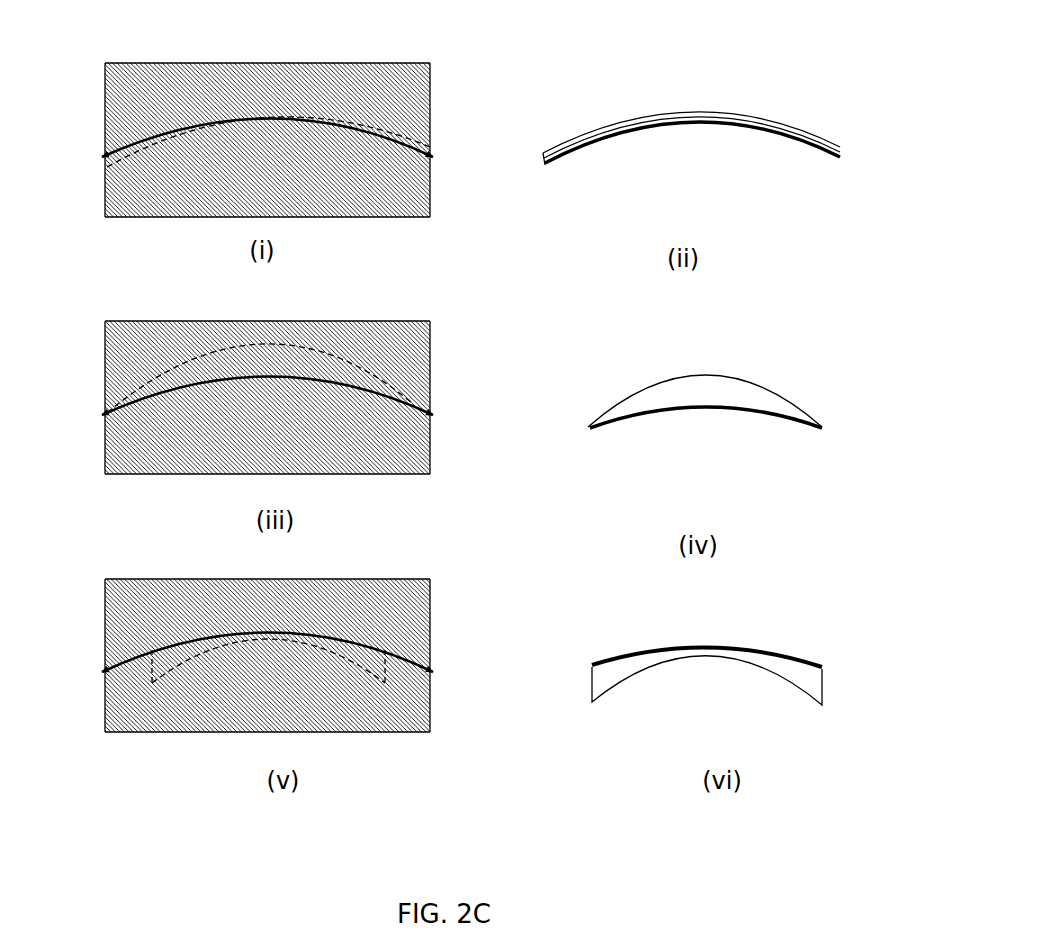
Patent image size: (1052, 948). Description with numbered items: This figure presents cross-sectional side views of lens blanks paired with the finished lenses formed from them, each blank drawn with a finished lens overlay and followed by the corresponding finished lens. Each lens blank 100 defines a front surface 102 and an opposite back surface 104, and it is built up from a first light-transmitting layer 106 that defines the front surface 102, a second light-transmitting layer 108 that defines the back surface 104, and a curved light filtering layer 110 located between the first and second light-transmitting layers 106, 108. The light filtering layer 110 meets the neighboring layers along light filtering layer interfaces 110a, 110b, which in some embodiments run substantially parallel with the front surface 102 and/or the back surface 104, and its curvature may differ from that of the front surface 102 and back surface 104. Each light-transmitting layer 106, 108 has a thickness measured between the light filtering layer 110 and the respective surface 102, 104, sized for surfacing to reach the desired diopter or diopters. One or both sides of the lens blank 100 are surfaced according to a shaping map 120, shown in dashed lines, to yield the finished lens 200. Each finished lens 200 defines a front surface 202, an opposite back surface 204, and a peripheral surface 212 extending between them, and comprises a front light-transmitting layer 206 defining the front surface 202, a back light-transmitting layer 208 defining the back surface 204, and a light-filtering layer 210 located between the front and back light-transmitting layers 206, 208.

The lens blank 100 is at (235, 63).
The front surface 102 is at (413, 63).
The back surface 104 is at (403, 217).
The first light-transmitting layer 106 is at (105, 87).
The second light-transmitting layer 108 is at (103, 205).
The light filtering layer 110 is at (110, 143).
The light filtering layer interface 110a is at (423, 143).
The light filtering layer interface 110b is at (108, 165).
The shaping map 120 is at (218, 112).
The finished lens 200 is at (640, 115).
The front surface 202 is at (758, 115).
The back surface 204 is at (720, 125).
The front light-transmitting layer 206 is at (582, 137).
The back light-transmitting layer 208 is at (588, 143).
The light-filtering layer 210 is at (545, 153).
The peripheral surface 212 is at (840, 150).